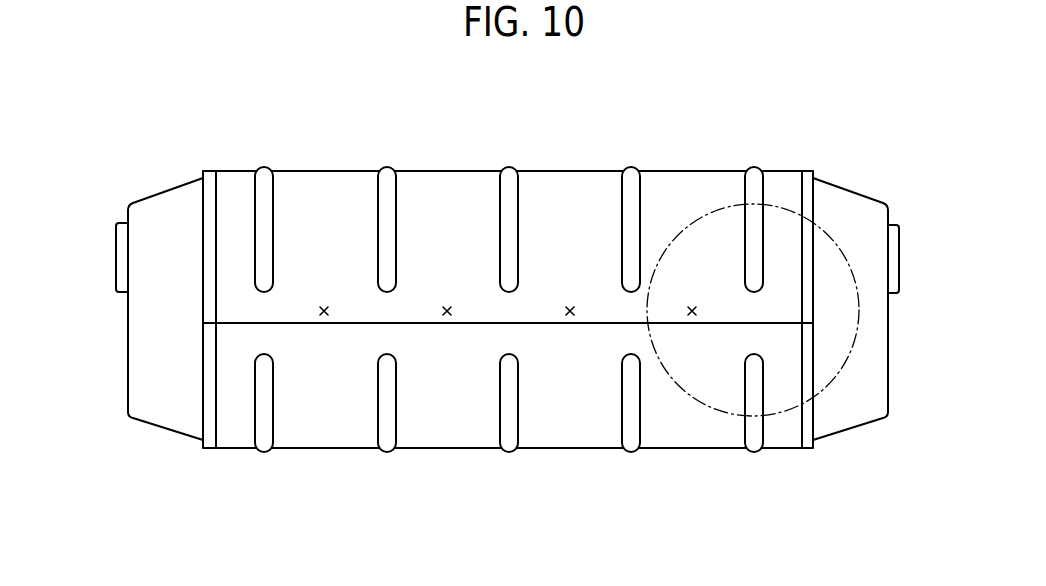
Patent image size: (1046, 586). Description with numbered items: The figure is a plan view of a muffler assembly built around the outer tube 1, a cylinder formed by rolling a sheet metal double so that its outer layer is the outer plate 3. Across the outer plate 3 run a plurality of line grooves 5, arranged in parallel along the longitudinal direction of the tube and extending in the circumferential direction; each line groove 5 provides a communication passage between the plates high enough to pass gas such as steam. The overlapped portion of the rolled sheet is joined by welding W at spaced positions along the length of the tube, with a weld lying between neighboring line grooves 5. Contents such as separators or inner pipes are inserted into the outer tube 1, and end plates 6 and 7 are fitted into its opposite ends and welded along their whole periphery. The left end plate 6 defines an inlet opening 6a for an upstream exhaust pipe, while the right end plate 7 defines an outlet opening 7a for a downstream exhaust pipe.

The outer tube 1 is at (317, 171).
The outer plate 3 is at (443, 210).
The line groove 5 is at (753, 168).
The end plate 6 is at (153, 210).
The inlet opening 6a is at (115, 235).
The end plate 7 is at (847, 215).
The outlet opening 7a is at (900, 245).
The welding W is at (452, 317).